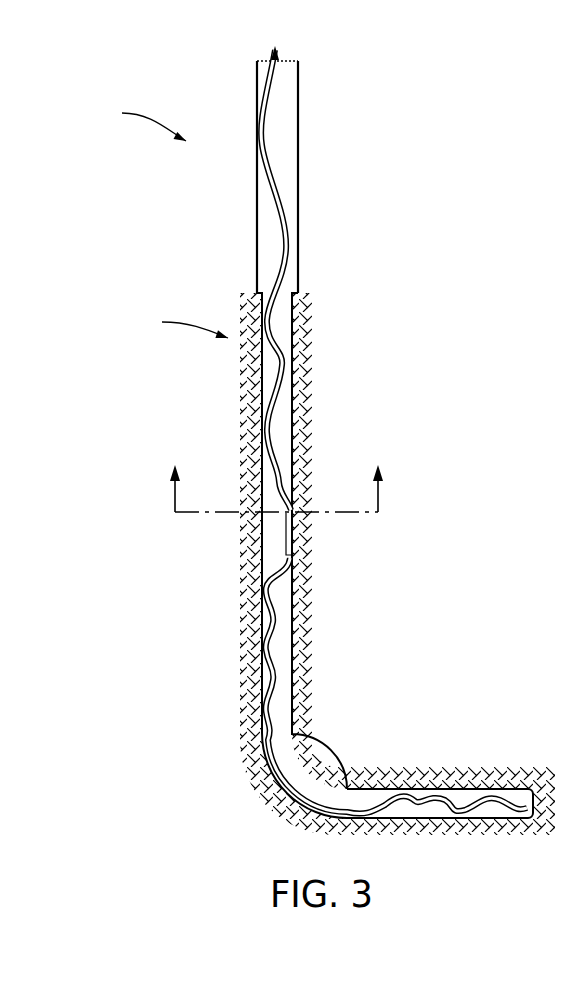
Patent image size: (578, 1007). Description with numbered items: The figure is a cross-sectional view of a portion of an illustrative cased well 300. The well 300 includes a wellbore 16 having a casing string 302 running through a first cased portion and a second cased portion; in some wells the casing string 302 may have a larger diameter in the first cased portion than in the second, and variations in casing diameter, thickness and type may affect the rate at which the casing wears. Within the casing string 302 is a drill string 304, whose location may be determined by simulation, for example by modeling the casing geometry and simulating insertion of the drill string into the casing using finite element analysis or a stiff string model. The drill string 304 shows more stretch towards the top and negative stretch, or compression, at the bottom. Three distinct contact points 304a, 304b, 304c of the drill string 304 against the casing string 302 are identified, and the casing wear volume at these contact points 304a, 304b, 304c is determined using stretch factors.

The cased well 300 is at (132, 78).
The wellbore 16 is at (257, 128).
The casing string 302 is at (257, 202).
The drill string 304 is at (280, 355).
The contact point 304a is at (293, 513).
The contact point 304b is at (297, 558).
The contact point 304c is at (262, 590).